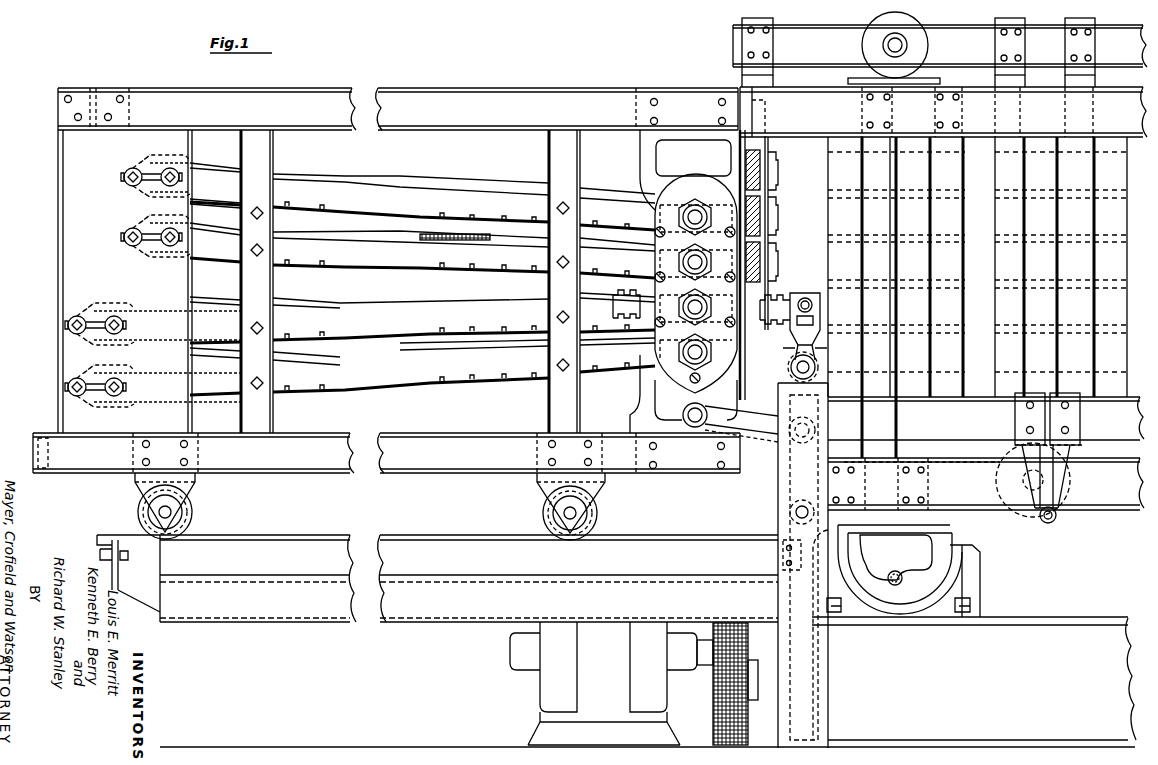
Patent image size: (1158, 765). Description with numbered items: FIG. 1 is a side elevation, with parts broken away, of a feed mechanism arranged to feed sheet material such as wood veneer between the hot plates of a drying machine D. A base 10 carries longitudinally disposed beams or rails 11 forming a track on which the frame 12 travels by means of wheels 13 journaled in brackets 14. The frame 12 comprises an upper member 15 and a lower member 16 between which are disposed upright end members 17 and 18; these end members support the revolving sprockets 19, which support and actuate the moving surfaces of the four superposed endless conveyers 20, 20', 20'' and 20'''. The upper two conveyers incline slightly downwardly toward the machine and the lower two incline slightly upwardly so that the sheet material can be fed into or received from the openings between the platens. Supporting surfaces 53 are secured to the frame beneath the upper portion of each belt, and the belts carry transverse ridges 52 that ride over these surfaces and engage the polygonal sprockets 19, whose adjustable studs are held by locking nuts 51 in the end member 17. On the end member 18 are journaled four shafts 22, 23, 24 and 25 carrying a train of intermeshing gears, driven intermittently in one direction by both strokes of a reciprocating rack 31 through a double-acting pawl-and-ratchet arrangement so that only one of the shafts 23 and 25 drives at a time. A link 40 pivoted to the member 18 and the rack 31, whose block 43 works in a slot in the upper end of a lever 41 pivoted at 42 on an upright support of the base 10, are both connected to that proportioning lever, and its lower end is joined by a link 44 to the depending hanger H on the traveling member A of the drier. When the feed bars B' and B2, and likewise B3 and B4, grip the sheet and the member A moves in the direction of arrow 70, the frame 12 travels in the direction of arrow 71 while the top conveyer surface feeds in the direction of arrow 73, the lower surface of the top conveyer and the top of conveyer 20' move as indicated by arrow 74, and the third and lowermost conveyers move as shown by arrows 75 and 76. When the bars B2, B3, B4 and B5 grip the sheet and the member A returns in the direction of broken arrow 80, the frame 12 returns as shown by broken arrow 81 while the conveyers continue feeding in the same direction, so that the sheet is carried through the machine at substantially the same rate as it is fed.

The base 10 is at (150, 560).
The beams or rails 11 is at (362, 530).
The frame 12 is at (343, 475).
The wheels 13 is at (193, 517).
The brackets 14 is at (196, 488).
The upper member 15 is at (398, 100).
The lower member 16 is at (386, 453).
The upright end member 17 is at (163, 282).
The upright end member 18 is at (652, 175).
The revolving sprockets 19 is at (142, 228).
The endless conveyer 20 is at (422, 176).
The endless conveyer 20' is at (422, 229).
The endless conveyer 20'' is at (422, 291).
The endless conveyer 20''' is at (422, 347).
The shaft 22 is at (683, 217).
The shaft 23 is at (683, 262).
The shaft 24 is at (684, 309).
The shaft 25 is at (695, 362).
The reciprocating rack 31 is at (614, 310).
The link 40 is at (759, 437).
The lever 41 is at (790, 480).
The pivot 42 is at (818, 367).
The block 43 is at (808, 293).
The link 44 is at (980, 510).
The locking nuts 51 is at (133, 175).
The extensions or ridges 52 is at (328, 205).
The supporting surfaces 53 is at (430, 180).
The arrow 70 is at (739, 16).
The arrow 71 is at (416, 421).
The arrow 73 is at (378, 165).
The arrow 74 is at (395, 236).
The arrow 75 is at (384, 310).
The arrow 76 is at (385, 368).
The broken arrow 80 is at (786, 16).
The broken arrow 81 is at (404, 463).
The traveling frame or member A is at (733, 45).
The feed bar B' is at (773, 170).
The feed bar B2 is at (779, 220).
The feed bar B3 is at (779, 262).
The feed bar B4 is at (775, 296).
The feed bar B5 is at (805, 352).
The drying machine D is at (1108, 515).
The depending hanger H is at (1046, 525).